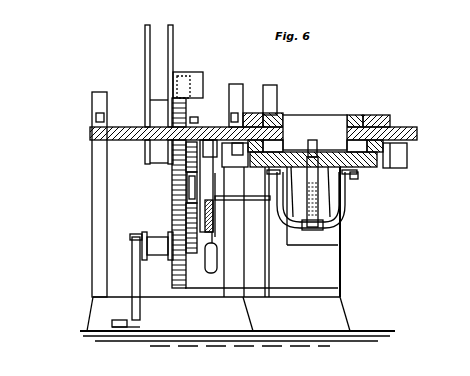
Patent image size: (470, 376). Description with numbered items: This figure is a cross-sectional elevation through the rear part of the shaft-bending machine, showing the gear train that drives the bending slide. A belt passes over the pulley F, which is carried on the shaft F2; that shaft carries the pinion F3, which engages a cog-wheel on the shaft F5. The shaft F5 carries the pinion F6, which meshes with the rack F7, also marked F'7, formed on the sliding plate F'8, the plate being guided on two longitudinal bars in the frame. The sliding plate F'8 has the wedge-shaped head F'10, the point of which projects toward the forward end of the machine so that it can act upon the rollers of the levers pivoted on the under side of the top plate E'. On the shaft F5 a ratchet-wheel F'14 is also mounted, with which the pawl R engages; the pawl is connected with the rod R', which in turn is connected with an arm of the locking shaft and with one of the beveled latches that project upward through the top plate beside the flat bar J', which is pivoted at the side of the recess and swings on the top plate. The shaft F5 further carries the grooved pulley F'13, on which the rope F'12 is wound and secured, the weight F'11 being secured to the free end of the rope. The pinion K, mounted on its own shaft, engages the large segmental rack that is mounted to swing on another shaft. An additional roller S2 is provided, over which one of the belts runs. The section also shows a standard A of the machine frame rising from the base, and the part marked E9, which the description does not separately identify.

The frame standard A is at (96, 194).
The top plate E' is at (253, 125).
The pulley F is at (159, 94).
The shaft F2 is at (159, 104).
The rack F'7 is at (175, 180).
The rod R' is at (174, 197).
The pawl R is at (207, 188).
The rope F'12 is at (231, 218).
The grooved pulley F'13 is at (230, 238).
The weight F'11 is at (214, 262).
The ratchet-wheel F'14 is at (197, 263).
The roller S2 is at (142, 279).
The flat bar J' is at (316, 106).
The pinion K is at (315, 132).
The rod E9 is at (314, 153).
The wedge-shaped head F'10 is at (310, 171).
The sliding plate F'8 is at (286, 199).
The pinion F6 is at (313, 183).
The shaft F5 is at (297, 192).
The pinion F3 is at (332, 192).
The rack F7 is at (313, 230).